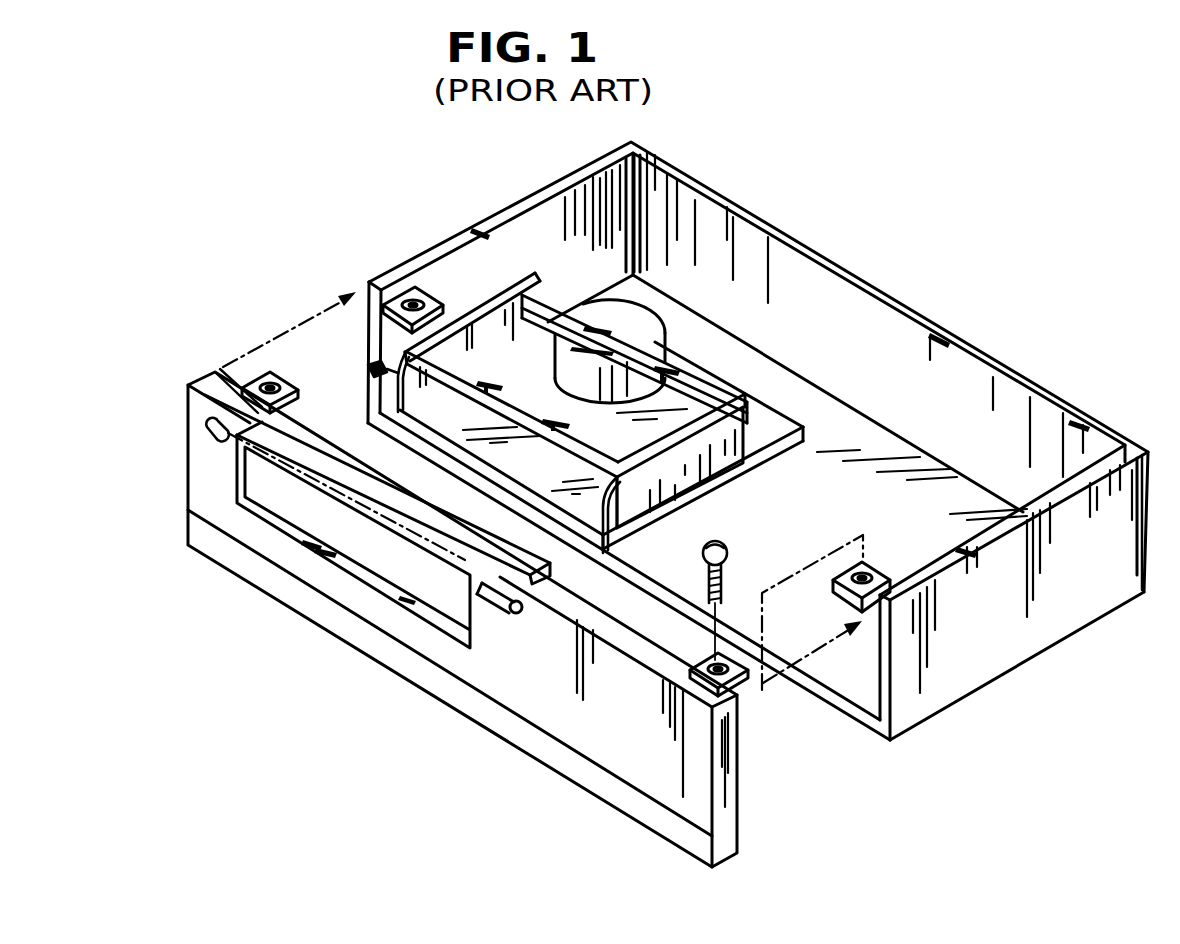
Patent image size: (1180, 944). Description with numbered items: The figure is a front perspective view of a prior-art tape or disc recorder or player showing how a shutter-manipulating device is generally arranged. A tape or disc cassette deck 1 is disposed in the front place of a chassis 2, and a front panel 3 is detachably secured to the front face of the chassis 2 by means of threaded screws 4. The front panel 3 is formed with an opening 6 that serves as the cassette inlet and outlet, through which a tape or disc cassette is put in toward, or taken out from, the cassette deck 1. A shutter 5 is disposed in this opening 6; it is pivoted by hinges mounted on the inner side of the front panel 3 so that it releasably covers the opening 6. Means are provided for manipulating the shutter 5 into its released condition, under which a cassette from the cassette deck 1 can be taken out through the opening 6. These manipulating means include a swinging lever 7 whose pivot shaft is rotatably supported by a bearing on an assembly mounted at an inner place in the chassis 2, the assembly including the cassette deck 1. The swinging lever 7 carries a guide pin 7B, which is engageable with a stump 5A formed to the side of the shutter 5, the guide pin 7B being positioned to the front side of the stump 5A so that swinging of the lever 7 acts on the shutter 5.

The cassette deck 1 is at (790, 448).
The chassis 2 is at (993, 647).
The front panel 3 is at (524, 735).
The threaded screws 4 is at (727, 552).
The shutter 5 is at (347, 432).
The stump 5A is at (214, 370).
The opening 6 is at (342, 567).
The swinging lever 7 is at (380, 364).
The guide pin 7B is at (368, 366).